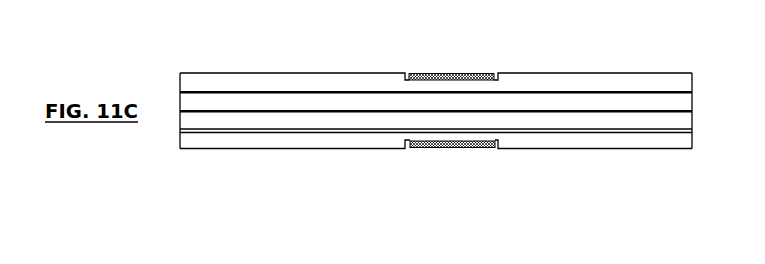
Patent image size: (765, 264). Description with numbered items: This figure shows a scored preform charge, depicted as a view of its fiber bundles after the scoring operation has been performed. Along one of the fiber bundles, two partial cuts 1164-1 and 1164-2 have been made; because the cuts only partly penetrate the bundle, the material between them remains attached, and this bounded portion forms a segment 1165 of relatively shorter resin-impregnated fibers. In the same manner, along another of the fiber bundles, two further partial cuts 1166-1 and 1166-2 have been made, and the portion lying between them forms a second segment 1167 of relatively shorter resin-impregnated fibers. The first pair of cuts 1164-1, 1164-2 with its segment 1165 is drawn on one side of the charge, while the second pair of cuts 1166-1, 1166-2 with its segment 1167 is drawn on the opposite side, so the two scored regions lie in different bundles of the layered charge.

The partial cut 1164-1 is at (407, 68).
The partial cut 1164-2 is at (502, 67).
The segment 1165 is at (445, 65).
The partial cut 1166-1 is at (405, 158).
The partial cut 1166-2 is at (502, 158).
The segment 1167 is at (447, 157).